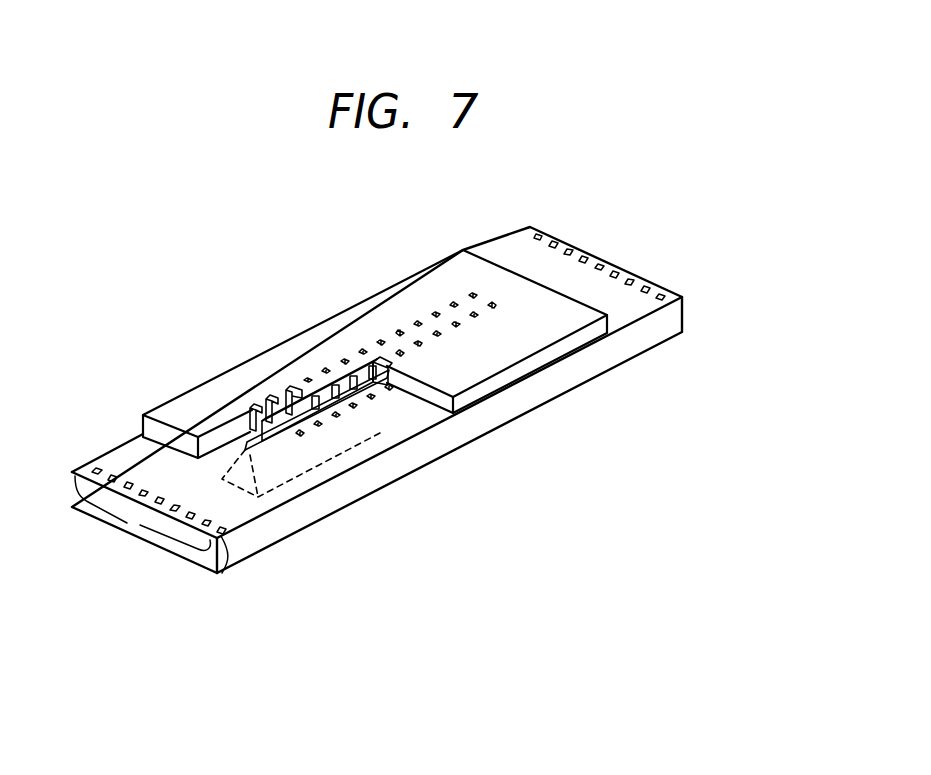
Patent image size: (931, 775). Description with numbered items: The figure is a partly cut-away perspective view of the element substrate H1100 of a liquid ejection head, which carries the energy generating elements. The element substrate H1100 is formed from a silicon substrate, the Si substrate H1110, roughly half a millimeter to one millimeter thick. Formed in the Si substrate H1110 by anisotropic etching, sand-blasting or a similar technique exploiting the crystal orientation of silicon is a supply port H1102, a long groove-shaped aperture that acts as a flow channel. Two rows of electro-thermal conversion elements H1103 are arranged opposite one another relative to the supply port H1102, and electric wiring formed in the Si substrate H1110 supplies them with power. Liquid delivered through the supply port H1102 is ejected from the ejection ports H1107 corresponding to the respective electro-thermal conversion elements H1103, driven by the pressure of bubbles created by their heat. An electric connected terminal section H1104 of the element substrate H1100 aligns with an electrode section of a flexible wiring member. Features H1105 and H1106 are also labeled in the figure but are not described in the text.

The element substrate H1100 is at (408, 423).
The supply port H1102 is at (244, 458).
The electro-thermal conversion elements H1103 is at (260, 430).
The electric connected terminal section H1104 is at (140, 525).
The edge portion H1105 is at (225, 573).
The contact terminals H1106 is at (515, 303).
The ejection ports H1107 is at (306, 378).
The Si substrate H1110 is at (548, 443).